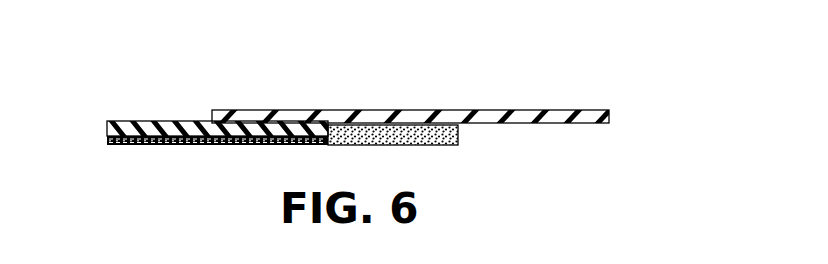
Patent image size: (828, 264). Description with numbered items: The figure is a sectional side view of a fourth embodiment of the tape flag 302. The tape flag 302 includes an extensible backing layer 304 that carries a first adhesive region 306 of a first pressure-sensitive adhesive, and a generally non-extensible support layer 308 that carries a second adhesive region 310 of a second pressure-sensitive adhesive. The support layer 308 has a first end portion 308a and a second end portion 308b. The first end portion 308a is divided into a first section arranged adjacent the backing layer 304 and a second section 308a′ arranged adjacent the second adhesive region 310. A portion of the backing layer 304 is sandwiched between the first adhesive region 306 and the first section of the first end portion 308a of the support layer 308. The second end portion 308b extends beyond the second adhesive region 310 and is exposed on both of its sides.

The tape flag 302 is at (459, 68).
The extensible backing layer 304 is at (173, 121).
The first adhesive region 306 is at (172, 145).
The support layer 308 is at (458, 112).
The first end portion 308a is at (368, 112).
The second section 308a′ is at (413, 112).
The second end portion 308b is at (543, 122).
The second adhesive region 310 is at (420, 146).